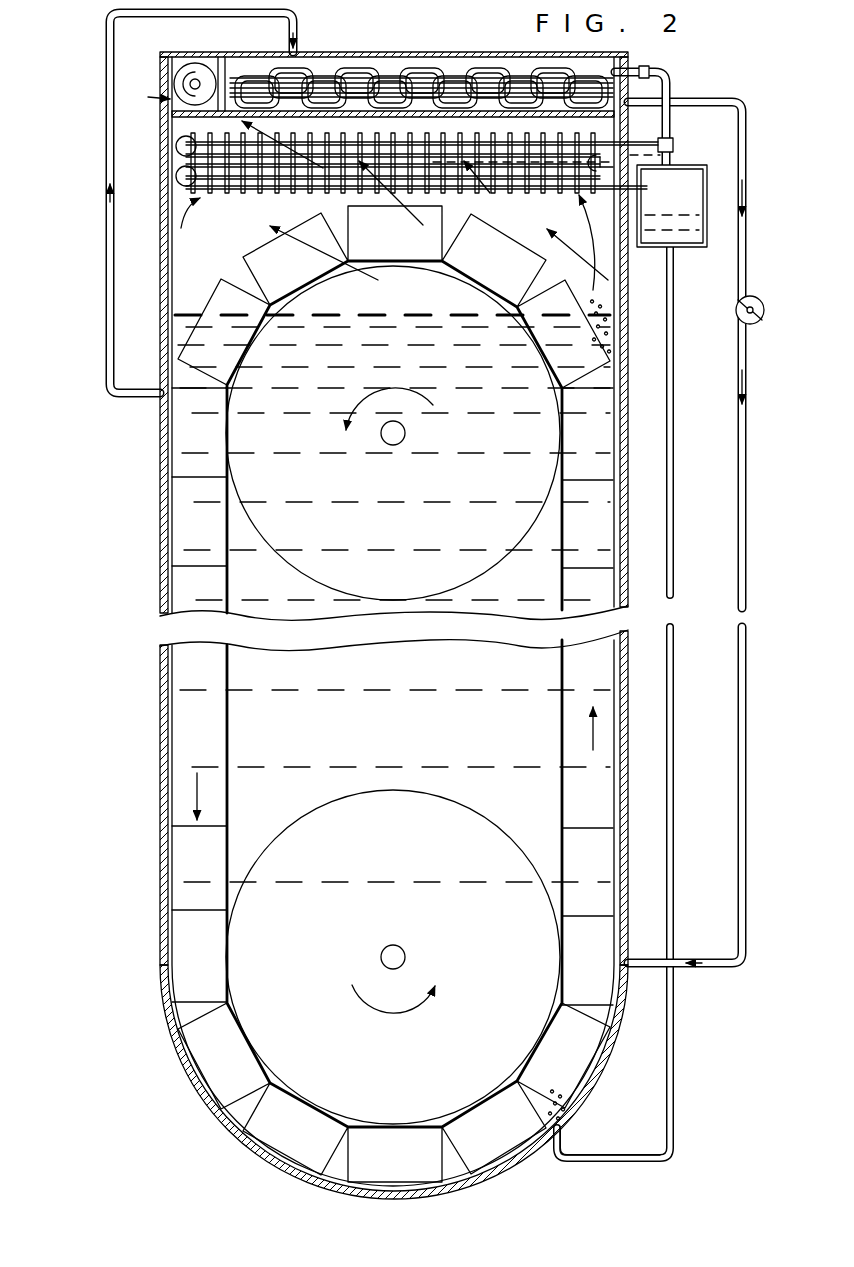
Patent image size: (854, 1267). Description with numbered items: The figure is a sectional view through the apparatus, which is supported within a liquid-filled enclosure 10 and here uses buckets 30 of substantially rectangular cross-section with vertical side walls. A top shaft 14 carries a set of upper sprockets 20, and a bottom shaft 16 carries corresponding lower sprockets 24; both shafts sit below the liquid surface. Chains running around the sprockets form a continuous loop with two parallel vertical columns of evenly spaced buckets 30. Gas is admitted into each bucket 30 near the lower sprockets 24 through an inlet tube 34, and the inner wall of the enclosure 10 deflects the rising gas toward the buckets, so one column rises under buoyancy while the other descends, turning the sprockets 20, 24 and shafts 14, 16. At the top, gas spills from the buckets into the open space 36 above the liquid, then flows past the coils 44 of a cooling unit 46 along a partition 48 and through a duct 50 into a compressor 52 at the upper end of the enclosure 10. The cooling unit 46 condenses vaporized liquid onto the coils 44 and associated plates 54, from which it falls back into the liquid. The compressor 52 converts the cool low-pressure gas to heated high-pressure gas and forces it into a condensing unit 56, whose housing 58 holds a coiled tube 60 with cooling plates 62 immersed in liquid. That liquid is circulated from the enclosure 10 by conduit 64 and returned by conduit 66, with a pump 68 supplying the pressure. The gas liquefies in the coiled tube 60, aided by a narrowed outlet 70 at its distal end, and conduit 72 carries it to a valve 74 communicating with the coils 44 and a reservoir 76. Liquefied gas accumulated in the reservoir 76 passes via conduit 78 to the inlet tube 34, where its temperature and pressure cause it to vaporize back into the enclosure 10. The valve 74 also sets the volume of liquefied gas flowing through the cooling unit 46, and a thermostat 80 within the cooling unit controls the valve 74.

The enclosure 10 is at (138, 952).
The top shaft 14 is at (389, 442).
The bottom shaft 16 is at (406, 951).
The upper sprockets 20 is at (473, 563).
The lower sprockets 24 is at (444, 828).
The buckets 30 is at (572, 655).
The inlet tube 34 is at (589, 1161).
The open space 36 is at (247, 238).
The coils 44 is at (178, 144).
The cooling unit 46 is at (188, 223).
The partition 48 is at (293, 110).
The duct 50 is at (141, 96).
The compressor 52 is at (190, 83).
The plates 54 is at (180, 167).
The condensing unit 56 is at (412, 48).
The housing 58 is at (322, 53).
The coiled tube 60 is at (423, 70).
The cooling plates 62 is at (455, 80).
The conduit 64 is at (105, 58).
The conduit 66 is at (751, 838).
The pump 68 is at (753, 325).
The narrowed outlet 70 is at (646, 66).
The conduit 72 is at (671, 90).
The valve 74 is at (674, 147).
The reservoir 76 is at (690, 249).
The conduit 78 is at (675, 838).
The thermostat 80 is at (433, 193).